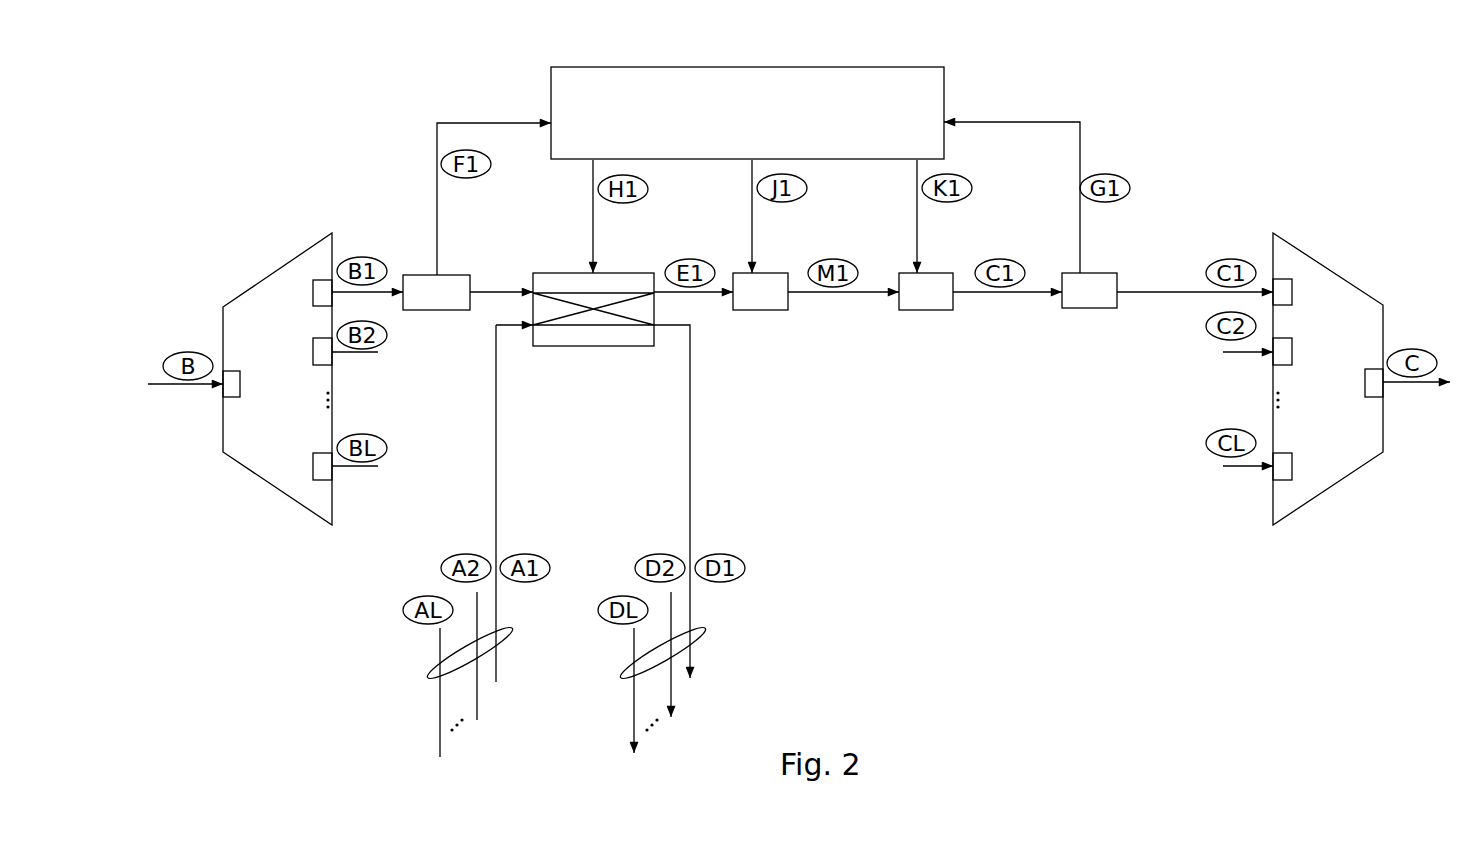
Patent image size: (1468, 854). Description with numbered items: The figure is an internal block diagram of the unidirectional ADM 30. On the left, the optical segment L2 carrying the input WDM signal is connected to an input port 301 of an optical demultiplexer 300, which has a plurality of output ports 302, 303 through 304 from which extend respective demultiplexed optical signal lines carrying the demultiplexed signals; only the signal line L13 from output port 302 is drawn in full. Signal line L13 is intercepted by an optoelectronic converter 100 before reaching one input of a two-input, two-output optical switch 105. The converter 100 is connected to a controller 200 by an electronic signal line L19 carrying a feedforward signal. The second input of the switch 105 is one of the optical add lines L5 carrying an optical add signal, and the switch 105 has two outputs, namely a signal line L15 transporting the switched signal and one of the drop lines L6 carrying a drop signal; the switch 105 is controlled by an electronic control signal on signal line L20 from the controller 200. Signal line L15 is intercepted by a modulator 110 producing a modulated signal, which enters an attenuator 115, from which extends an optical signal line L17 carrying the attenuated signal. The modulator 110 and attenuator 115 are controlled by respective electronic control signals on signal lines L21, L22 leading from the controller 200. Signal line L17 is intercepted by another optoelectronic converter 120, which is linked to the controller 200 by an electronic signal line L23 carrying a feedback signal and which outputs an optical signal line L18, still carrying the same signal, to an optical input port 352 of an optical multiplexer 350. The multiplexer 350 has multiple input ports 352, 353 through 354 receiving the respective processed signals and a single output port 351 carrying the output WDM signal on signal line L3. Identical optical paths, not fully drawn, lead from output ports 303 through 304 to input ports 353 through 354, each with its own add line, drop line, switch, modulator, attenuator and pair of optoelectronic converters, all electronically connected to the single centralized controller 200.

The unidirectional ADM 30 is at (322, 158).
The controller 200 is at (727, 126).
The optoelectronic converter 100 is at (417, 306).
The optical switch 105 is at (580, 346).
The modulator 110 is at (742, 305).
The attenuator 115 is at (908, 305).
The optoelectronic converter 120 is at (1071, 305).
The optical demultiplexer 300 is at (256, 395).
The input port 301 is at (233, 397).
The output port 302 is at (313, 292).
The output port 303 is at (313, 347).
The output port 304 is at (313, 472).
The optical multiplexer 350 is at (1307, 391).
The optical output port 351 is at (1374, 397).
The optical input port 352 is at (1292, 288).
The optical input port 353 is at (1292, 345).
The optical input port 354 is at (1292, 470).
The optical segment L2 is at (170, 385).
The signal line L3 is at (1400, 383).
The optical add line L5 is at (428, 678).
The drop line L6 is at (707, 632).
The demultiplexed optical signal line L13 is at (370, 293).
The signal line L15 is at (700, 293).
The optical signal line L17 is at (968, 293).
The optical signal line L18 is at (1140, 293).
The electronic signal line L19 is at (437, 178).
The signal line L20 is at (593, 206).
The signal line L21 is at (752, 206).
The signal line L22 is at (917, 206).
The electronic signal line L23 is at (1080, 206).